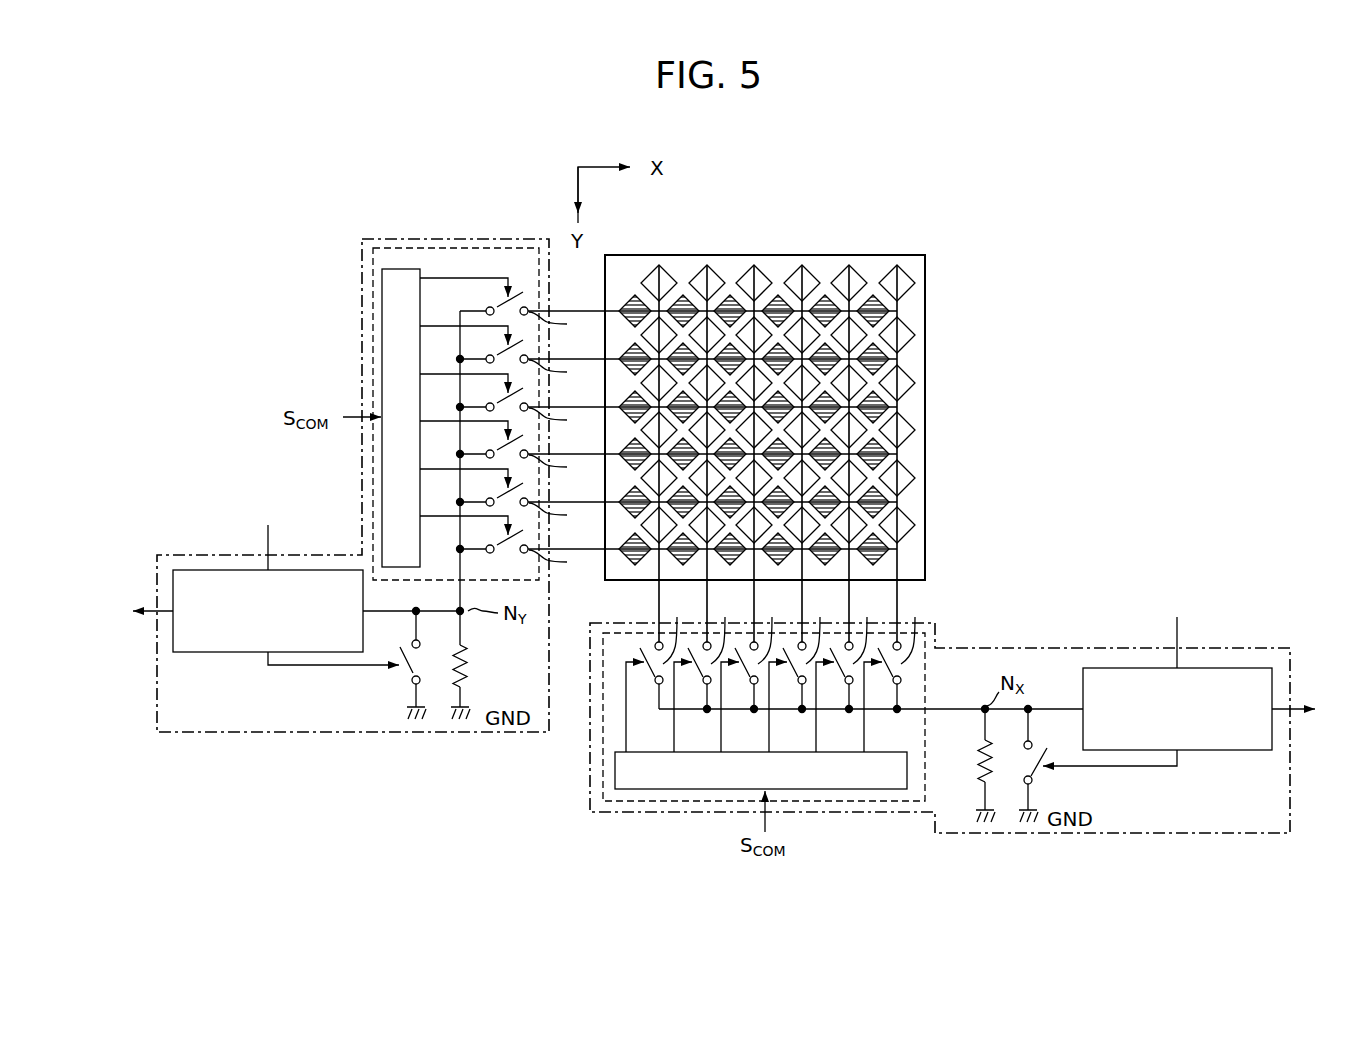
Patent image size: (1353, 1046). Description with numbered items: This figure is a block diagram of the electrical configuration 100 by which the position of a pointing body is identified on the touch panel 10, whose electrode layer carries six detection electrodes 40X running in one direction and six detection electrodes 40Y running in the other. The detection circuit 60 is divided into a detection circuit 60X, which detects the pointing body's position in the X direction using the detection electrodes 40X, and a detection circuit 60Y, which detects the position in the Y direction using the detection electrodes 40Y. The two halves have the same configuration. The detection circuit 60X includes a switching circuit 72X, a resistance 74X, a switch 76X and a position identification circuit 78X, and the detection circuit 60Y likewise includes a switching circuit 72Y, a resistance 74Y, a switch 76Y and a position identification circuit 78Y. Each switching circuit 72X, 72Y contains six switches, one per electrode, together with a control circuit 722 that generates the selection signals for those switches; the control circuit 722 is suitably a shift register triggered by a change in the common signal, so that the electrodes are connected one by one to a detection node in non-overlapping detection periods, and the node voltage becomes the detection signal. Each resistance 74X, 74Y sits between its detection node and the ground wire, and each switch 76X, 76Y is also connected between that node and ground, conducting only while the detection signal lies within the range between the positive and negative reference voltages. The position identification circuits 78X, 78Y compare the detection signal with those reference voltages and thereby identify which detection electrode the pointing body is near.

The touch panel device 100 is at (785, 141).
The touch panel (sensor substrate) 10 is at (909, 270).
The detection electrodes 40X is at (652, 263).
The detection electrodes 40Y is at (887, 298).
The detection circuit 60 is at (555, 810).
The detection circuit 60Y is at (483, 733).
The detection circuit 60X is at (590, 765).
The switching circuit 72Y is at (466, 248).
The switching circuit 72X is at (928, 670).
The control circuit 722 is at (382, 314).
The resistance 74Y is at (468, 665).
The resistance 74X is at (980, 758).
The switch 76Y is at (410, 674).
The switch 76X is at (1036, 773).
The position identification circuit 78Y is at (210, 653).
The position identification circuit 78X is at (1220, 752).